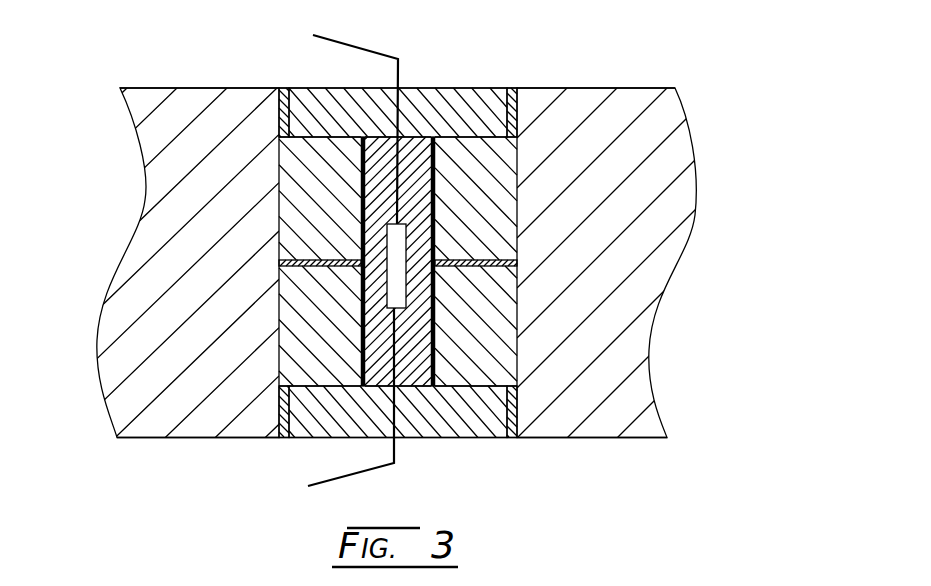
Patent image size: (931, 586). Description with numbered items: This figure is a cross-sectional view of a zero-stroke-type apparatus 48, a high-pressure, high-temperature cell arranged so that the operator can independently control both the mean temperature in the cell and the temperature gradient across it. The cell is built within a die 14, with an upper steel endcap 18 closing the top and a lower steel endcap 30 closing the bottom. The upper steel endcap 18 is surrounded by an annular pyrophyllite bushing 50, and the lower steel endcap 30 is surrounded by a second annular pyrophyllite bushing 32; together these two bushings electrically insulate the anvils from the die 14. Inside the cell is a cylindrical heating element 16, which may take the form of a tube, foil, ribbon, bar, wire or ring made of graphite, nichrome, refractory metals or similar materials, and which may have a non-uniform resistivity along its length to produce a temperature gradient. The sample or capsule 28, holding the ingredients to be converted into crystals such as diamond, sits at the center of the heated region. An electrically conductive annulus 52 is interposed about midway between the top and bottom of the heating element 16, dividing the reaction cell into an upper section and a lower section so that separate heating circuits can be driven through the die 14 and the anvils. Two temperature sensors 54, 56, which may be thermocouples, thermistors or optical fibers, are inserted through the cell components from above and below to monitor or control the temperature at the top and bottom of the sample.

The die 14 is at (109, 302).
The heating element 16 is at (436, 327).
The upper steel endcap 18 is at (432, 88).
The capsule 28 is at (392, 248).
The lower steel endcap 30 is at (425, 438).
The annular pyrophyllite bushing 32 is at (513, 438).
The zero-stroke-type apparatus 48 is at (760, 81).
The annular pyrophyllite bushing 50 is at (283, 88).
The electrically conductive annulus 52 is at (490, 260).
The temperature sensor 54 is at (367, 47).
The temperature sensor 56 is at (327, 478).